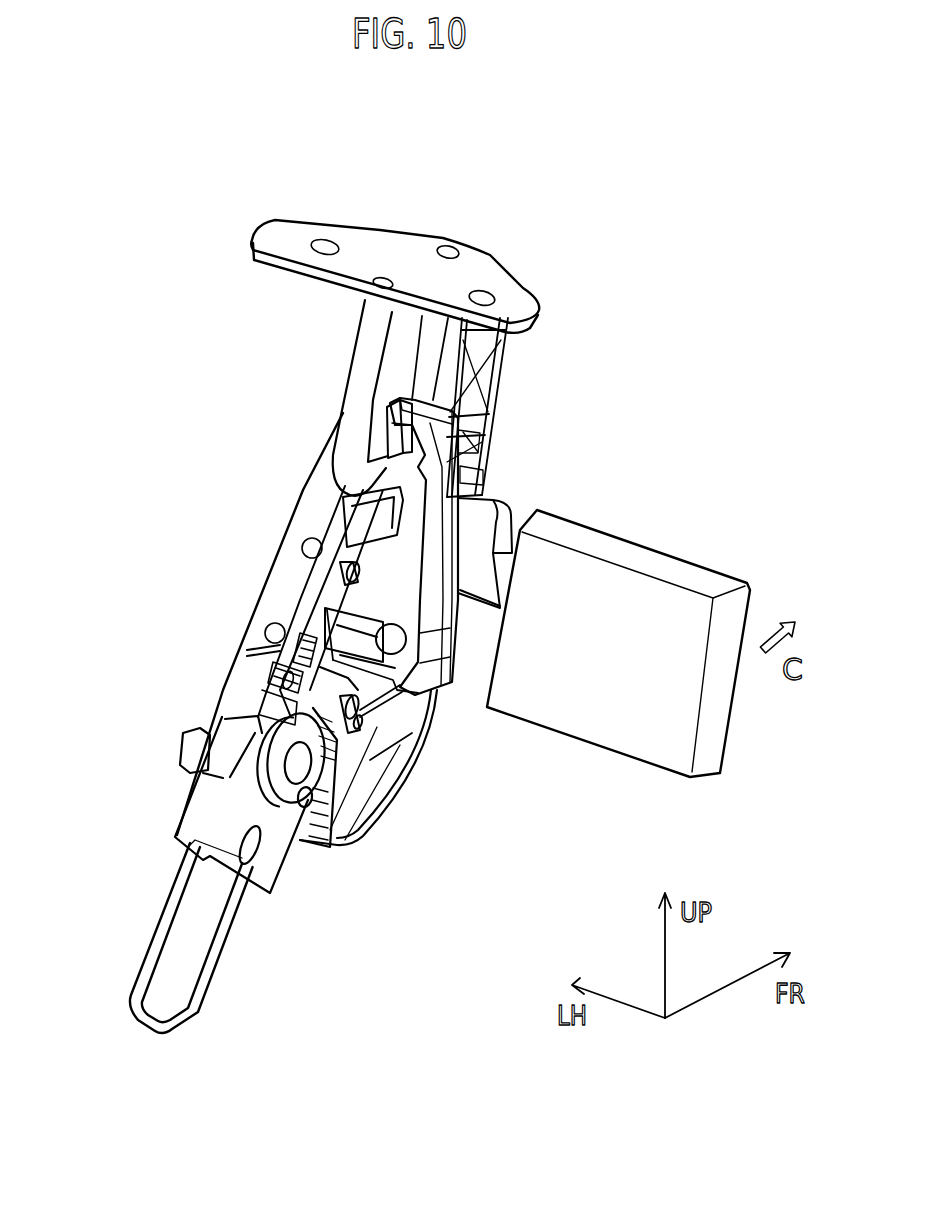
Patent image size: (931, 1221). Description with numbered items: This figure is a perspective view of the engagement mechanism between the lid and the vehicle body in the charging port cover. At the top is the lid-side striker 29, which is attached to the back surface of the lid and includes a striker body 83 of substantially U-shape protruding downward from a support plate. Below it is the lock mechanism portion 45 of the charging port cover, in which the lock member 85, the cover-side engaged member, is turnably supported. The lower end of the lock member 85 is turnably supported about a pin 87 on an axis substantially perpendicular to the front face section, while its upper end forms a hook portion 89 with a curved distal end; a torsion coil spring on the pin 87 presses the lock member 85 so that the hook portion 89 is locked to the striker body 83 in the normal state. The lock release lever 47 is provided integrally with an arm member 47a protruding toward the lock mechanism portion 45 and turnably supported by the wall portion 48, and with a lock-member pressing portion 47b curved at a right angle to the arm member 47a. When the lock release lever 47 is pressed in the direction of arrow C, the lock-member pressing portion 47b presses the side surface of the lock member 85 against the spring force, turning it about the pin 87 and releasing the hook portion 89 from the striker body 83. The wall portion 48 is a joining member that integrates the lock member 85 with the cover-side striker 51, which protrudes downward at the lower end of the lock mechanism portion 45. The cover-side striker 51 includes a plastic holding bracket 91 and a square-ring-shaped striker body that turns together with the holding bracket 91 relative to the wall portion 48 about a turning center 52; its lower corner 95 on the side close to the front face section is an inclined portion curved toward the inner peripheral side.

The lower corner 95 is at (373, 240).
The lid-side striker 29 is at (355, 333).
The striker body 83 is at (362, 382).
The hook portion 89 is at (387, 433).
The arm member 47a is at (480, 523).
The lock-member pressing portion 47b is at (390, 528).
The lock release lever 47 is at (628, 743).
The pin 87 is at (333, 603).
The lock mechanism portion 45 is at (240, 623).
The wall portion 48 is at (220, 698).
The holding bracket 91 is at (193, 813).
The turning center 52 is at (330, 837).
The lock member 85 is at (432, 655).
The cover-side striker 51 is at (135, 965).